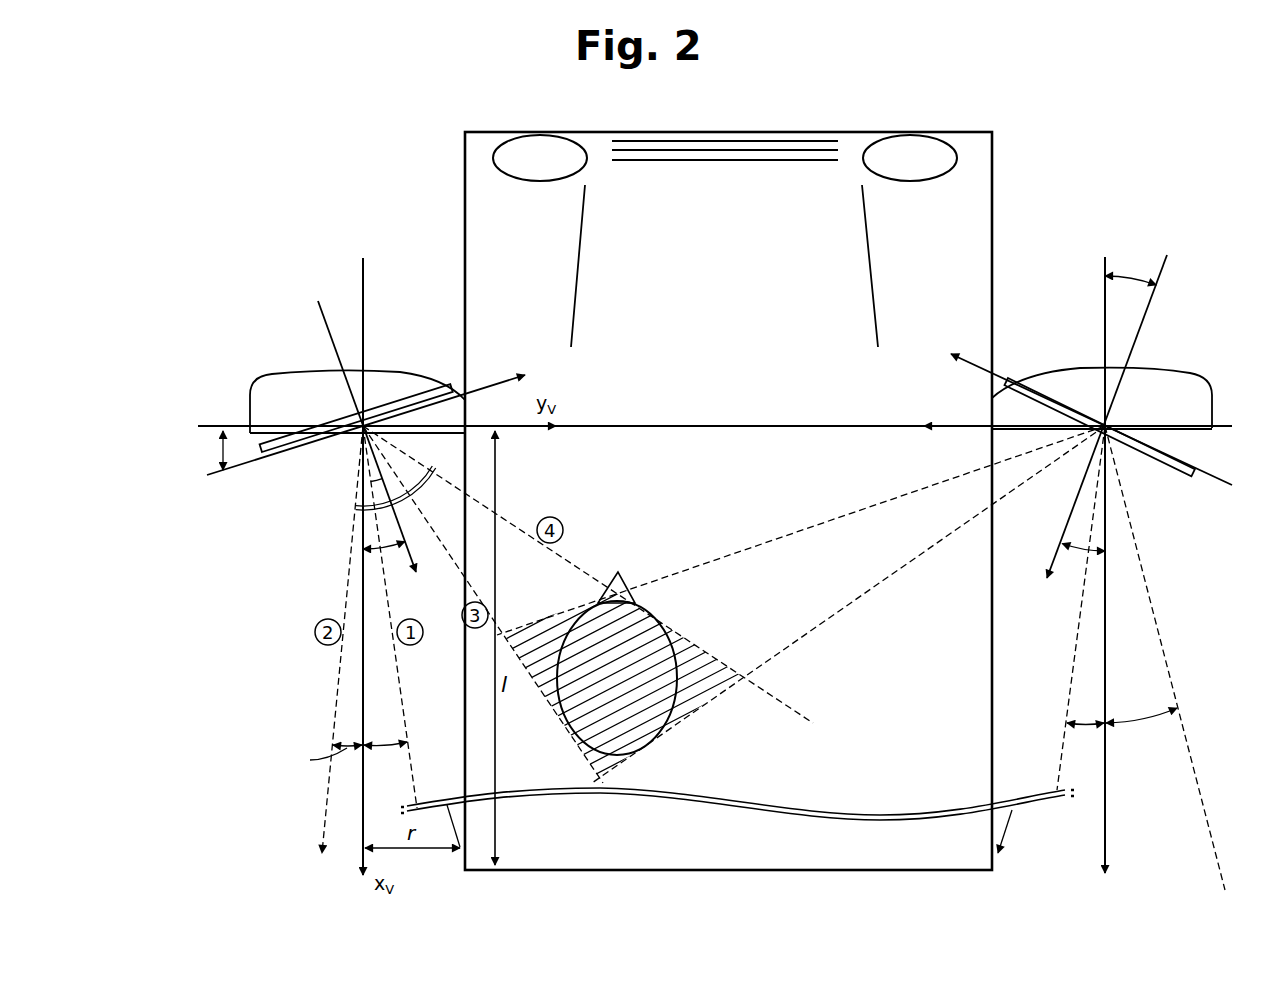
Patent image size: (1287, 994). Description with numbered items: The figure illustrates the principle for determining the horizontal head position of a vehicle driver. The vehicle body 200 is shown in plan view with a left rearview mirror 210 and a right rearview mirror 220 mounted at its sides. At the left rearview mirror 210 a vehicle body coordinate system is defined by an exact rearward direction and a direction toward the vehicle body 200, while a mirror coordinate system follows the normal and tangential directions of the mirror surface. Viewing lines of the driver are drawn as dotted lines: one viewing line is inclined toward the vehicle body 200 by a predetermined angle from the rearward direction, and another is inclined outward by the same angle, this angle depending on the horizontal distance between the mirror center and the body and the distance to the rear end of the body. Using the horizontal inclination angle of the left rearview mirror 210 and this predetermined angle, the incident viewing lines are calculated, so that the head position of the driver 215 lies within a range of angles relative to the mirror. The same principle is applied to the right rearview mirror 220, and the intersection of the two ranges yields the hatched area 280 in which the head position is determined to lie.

The vehicle body 200 is at (853, 167).
The left rearview mirror 210 is at (285, 378).
The right rearview mirror 220 is at (1175, 376).
The head position of the driver 215 is at (676, 704).
The hatched area 280 is at (703, 662).